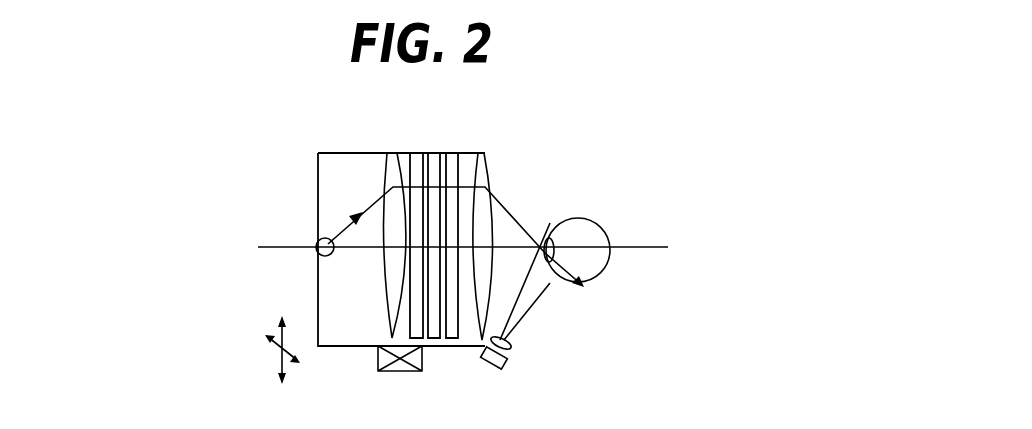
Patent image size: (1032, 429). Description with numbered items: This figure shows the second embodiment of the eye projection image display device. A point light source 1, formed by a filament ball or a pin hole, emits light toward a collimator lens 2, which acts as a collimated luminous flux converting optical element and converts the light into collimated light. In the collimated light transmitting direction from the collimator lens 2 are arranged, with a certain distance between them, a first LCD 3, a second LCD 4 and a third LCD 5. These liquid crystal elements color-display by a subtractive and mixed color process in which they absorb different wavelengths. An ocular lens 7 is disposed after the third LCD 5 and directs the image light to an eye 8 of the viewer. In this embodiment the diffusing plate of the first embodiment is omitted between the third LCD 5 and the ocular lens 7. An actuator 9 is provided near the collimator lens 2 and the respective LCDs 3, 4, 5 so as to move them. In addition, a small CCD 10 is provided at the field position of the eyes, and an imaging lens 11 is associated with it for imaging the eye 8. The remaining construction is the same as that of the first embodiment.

The point light source 1 is at (324, 256).
The collimator lens 2 is at (388, 176).
The first LCD 3 is at (414, 165).
The second LCD 4 is at (440, 153).
The third LCD 5 is at (457, 153).
The ocular lens 7 is at (490, 170).
The eye 8 is at (598, 225).
The actuator 9 is at (380, 353).
The small CCD 10 is at (507, 360).
The imaging lens 11 is at (513, 345).